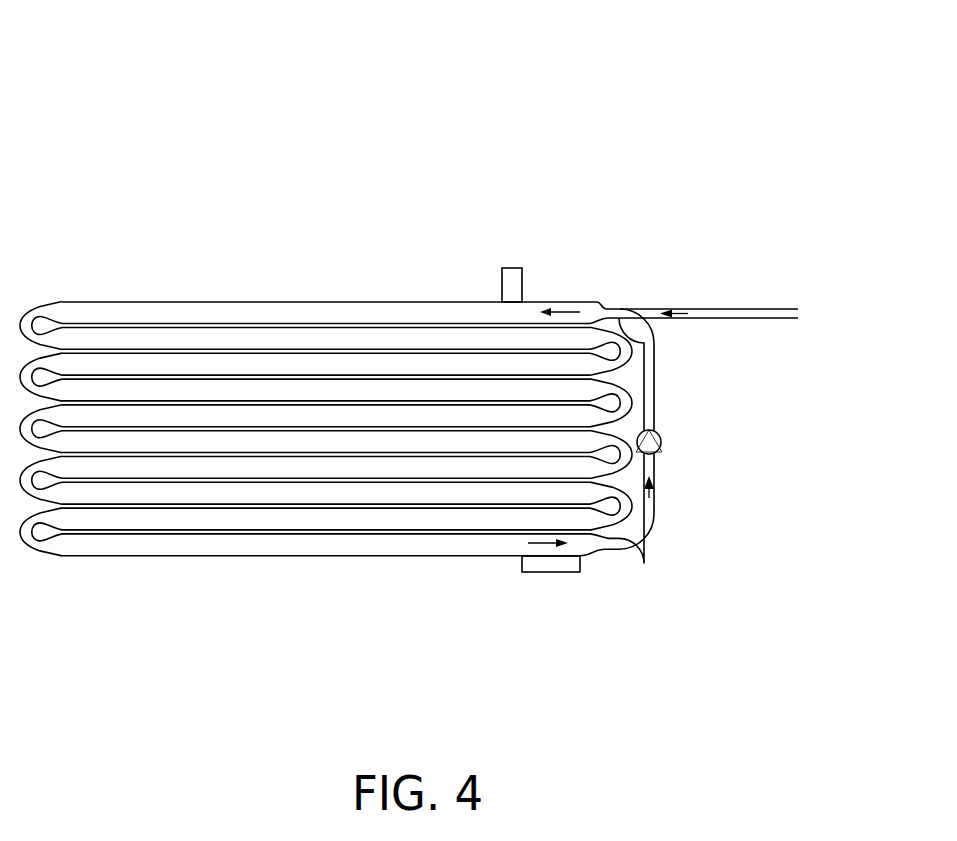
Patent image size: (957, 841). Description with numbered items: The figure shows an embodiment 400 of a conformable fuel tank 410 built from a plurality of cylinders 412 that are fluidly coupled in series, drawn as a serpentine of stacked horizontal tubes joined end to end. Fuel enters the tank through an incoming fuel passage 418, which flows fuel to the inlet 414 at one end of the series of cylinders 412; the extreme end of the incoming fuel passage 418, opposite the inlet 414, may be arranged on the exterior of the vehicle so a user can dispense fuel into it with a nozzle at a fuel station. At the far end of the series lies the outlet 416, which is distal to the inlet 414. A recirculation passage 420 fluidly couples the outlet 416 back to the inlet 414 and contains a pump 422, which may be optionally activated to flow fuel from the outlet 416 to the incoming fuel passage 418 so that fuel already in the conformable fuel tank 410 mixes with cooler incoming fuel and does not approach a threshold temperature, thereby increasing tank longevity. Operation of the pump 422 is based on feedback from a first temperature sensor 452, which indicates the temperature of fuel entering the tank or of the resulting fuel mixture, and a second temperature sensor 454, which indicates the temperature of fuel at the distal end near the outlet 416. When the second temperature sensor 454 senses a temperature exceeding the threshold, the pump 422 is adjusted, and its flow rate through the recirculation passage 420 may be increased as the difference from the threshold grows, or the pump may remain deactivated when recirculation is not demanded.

The embodiment 400 is at (864, 52).
The conformable fuel tank 410 is at (722, 178).
The cylinders 412 is at (282, 302).
The inlet 414 is at (606, 309).
The outlet 416 is at (602, 547).
The incoming fuel passage 418 is at (742, 303).
The recirculation passage 420 is at (654, 378).
The pump 422 is at (661, 440).
The first temperature sensor 452 is at (502, 268).
The second temperature sensor 454 is at (552, 572).